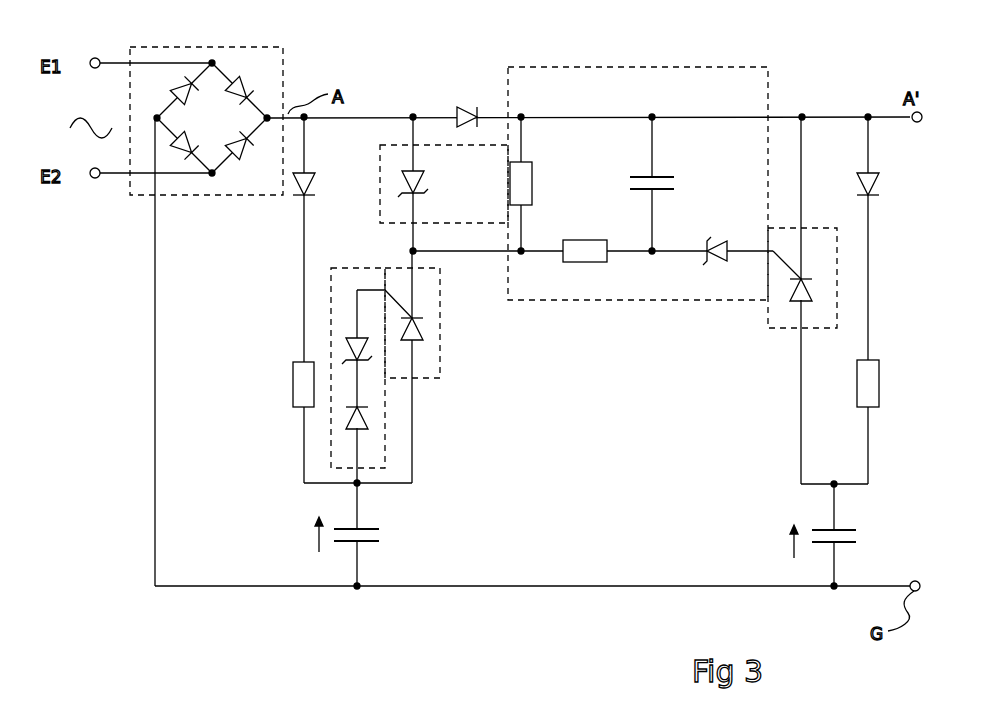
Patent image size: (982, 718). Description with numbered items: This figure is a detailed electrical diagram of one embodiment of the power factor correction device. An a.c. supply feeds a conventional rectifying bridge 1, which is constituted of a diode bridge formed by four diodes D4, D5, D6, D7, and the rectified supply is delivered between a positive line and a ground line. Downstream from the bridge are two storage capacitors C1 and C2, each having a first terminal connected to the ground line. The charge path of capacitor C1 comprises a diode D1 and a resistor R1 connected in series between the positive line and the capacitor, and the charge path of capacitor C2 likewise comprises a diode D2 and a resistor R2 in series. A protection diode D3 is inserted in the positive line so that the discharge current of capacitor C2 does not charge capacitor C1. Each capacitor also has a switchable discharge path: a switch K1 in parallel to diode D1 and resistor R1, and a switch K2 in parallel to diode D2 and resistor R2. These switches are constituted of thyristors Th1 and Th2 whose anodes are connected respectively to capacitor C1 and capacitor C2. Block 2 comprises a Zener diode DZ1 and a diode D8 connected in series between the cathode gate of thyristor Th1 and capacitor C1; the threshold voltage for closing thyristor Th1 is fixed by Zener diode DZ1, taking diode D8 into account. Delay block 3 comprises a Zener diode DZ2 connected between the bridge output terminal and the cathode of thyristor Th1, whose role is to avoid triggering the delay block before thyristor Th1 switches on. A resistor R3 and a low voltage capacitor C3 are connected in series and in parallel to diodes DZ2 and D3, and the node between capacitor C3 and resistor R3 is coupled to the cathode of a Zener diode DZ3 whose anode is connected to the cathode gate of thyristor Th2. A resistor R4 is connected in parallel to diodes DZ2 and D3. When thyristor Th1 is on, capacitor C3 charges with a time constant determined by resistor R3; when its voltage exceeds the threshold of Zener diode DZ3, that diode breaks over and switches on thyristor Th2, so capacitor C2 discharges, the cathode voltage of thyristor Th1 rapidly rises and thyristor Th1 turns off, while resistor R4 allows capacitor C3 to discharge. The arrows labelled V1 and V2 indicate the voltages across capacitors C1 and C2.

The rectifying bridge 1 is at (236, 116).
The block 2 is at (361, 350).
The delay block 3 is at (640, 163).
The diode D1 is at (312, 239).
The diode D2 is at (884, 238).
The protection diode D3 is at (465, 104).
The bridge diode D4 is at (167, 90).
The bridge diode D5 is at (250, 84).
The bridge diode D6 is at (191, 138).
The bridge diode D7 is at (241, 159).
The diode D8 is at (366, 445).
The Zener diode DZ1 is at (341, 348).
The Zener diode DZ2 is at (433, 184).
The Zener diode DZ3 is at (738, 237).
The resistor R1 is at (336, 422).
The resistor R2 is at (856, 422).
The resistor R3 is at (614, 239).
The resistor R4 is at (535, 184).
The storage capacitor C1 is at (372, 534).
The storage capacitor C2 is at (851, 535).
The low voltage capacitor C3 is at (645, 184).
The thyristor Th1 is at (450, 422).
The thyristor Th2 is at (757, 366).
The switch K1 is at (432, 367).
The switch K2 is at (790, 300).
The voltage across C1 V1 is at (303, 534).
The voltage across C2 V2 is at (776, 541).